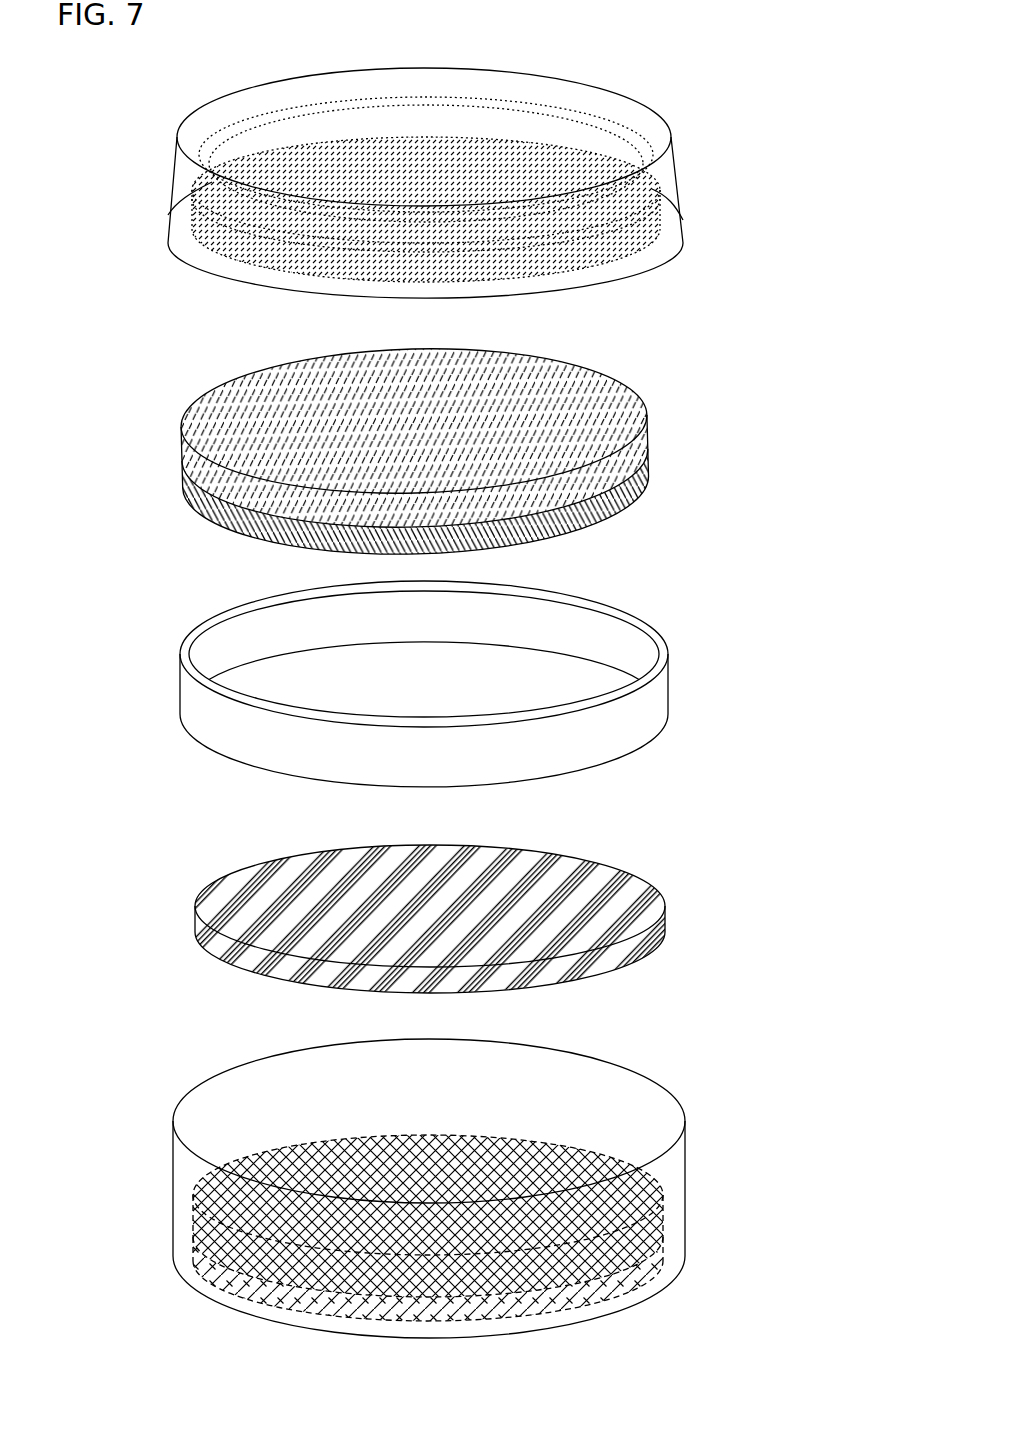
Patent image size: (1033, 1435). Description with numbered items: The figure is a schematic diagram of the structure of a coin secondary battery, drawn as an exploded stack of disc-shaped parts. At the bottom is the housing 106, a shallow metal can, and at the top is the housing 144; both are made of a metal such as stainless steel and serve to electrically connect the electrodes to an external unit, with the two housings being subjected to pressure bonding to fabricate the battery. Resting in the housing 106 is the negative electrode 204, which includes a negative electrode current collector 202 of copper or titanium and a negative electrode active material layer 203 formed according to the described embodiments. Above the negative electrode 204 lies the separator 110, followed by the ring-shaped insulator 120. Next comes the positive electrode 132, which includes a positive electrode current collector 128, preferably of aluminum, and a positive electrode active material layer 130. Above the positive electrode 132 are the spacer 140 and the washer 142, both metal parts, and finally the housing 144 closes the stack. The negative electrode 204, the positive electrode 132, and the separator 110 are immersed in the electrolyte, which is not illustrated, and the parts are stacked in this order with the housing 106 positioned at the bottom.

The housing 106 is at (685, 1172).
The separator 110 is at (197, 935).
The ring-shaped insulator 120 is at (669, 695).
The positive electrode current collector 128 is at (647, 455).
The positive electrode active material layer 130 is at (645, 503).
The positive electrode 132 is at (504, 451).
The spacer 140 is at (200, 250).
The washer 142 is at (205, 174).
The housing 144 is at (669, 135).
The negative electrode current collector 202 is at (663, 1207).
The negative electrode active material layer 203 is at (667, 1255).
The negative electrode 204 is at (520, 1228).